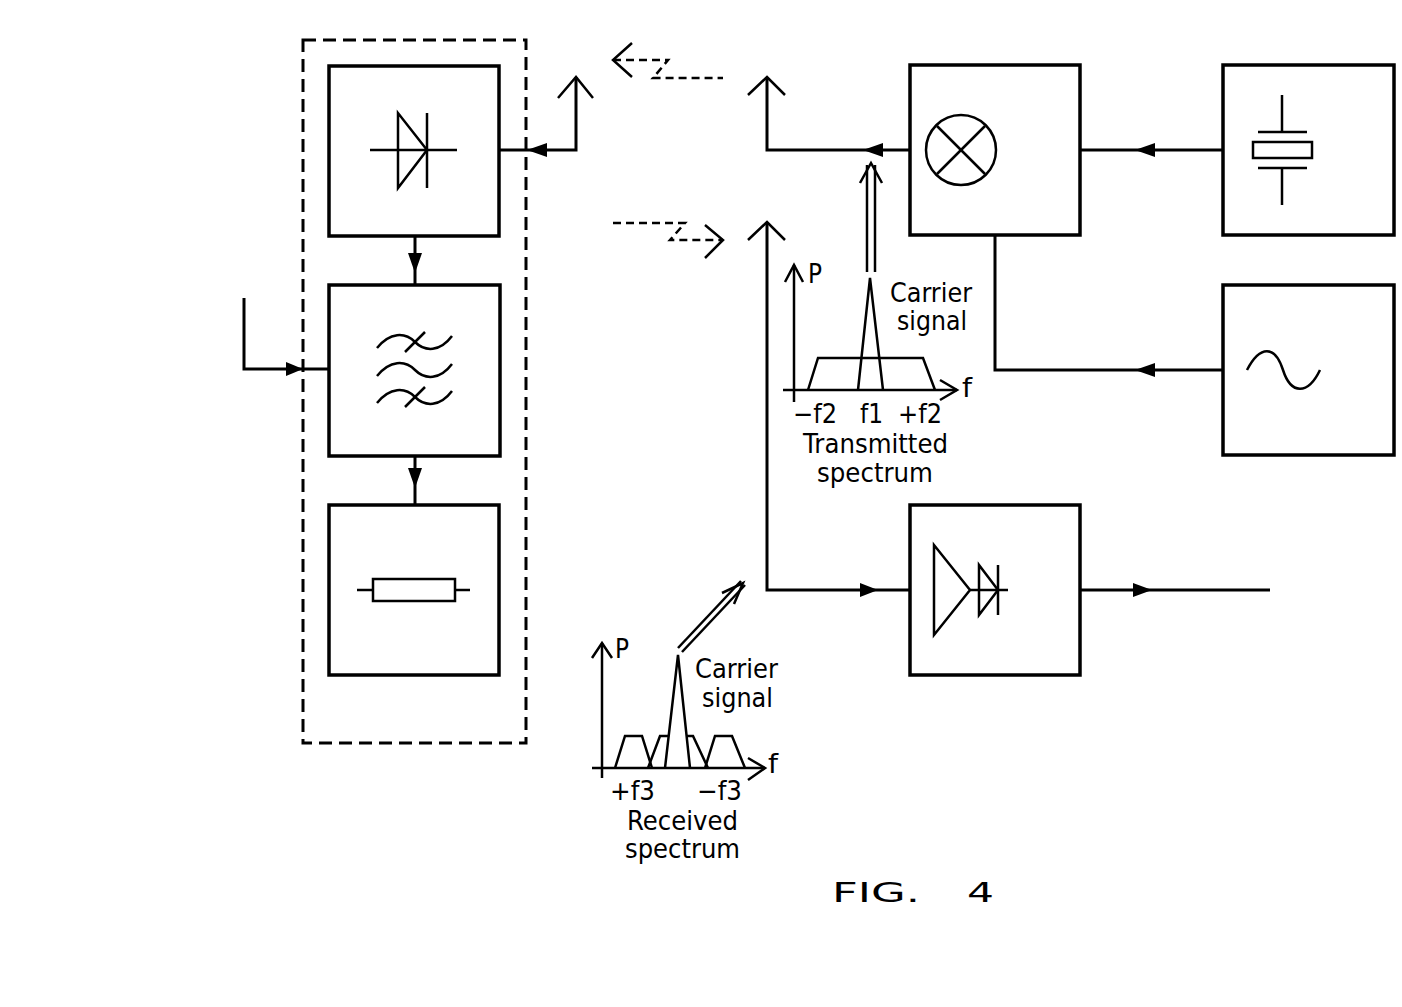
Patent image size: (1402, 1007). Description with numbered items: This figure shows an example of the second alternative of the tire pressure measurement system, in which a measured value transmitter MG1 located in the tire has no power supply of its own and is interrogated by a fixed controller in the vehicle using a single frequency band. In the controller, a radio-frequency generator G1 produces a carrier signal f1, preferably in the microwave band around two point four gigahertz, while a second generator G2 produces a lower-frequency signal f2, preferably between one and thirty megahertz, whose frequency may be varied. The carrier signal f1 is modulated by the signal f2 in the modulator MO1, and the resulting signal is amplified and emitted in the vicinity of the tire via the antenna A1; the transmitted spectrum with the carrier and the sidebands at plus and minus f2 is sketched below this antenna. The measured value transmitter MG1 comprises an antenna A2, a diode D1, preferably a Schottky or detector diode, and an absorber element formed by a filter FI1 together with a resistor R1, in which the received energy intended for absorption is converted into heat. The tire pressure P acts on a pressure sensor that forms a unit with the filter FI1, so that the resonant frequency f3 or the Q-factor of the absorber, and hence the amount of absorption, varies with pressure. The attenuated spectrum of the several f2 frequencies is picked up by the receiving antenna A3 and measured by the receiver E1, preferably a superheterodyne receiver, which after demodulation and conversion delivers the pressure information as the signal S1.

The measured value transmitter MG1 is at (414, 391).
The diode D1 is at (414, 175).
The filter FI1 is at (414, 395).
The resonant frequency f3 is at (475, 437).
The resistor R1 is at (414, 590).
The pressure P is at (259, 317).
The antenna A2 is at (554, 117).
The antenna A1 is at (821, 117).
The receiving antenna A3 is at (821, 409).
The modulator MO1 is at (995, 150).
The radio-frequency generator G1 is at (1308, 150).
The carrier signal f1 is at (1151, 132).
The generator G2 is at (1308, 370).
The lower-frequency signal f2 is at (1109, 306).
The receiver E1 is at (995, 590).
The signal S1 is at (1191, 590).